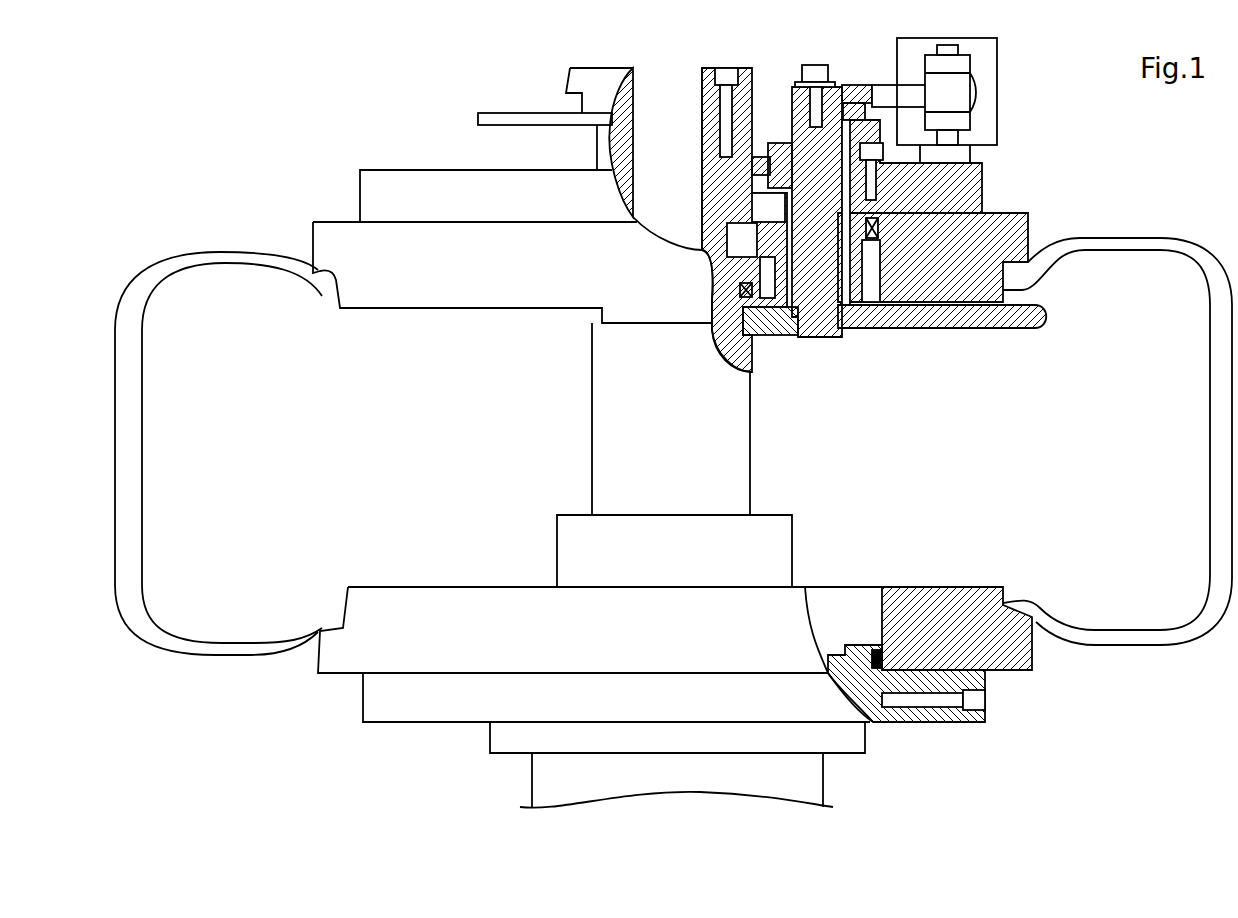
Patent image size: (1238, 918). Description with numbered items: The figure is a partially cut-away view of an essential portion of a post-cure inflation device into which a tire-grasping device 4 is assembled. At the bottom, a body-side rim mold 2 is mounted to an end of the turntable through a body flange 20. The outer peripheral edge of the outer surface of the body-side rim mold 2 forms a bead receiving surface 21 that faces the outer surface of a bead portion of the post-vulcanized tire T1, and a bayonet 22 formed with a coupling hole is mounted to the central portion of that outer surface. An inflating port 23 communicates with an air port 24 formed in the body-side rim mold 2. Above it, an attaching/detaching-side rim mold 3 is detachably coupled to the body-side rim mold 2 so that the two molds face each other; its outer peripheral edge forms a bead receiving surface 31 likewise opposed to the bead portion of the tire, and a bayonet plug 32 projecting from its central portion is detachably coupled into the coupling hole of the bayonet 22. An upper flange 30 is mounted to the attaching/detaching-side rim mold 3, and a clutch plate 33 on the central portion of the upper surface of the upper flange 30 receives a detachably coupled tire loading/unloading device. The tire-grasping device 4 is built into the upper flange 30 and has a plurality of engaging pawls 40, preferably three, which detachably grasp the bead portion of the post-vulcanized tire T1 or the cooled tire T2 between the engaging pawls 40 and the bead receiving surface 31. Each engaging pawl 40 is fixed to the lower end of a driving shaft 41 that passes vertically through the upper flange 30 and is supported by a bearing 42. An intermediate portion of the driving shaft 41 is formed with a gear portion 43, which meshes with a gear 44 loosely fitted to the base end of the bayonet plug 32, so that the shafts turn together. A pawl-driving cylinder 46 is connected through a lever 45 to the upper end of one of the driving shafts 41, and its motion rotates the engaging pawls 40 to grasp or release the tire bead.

The post-vulcanized tire T1 is at (1085, 240).
The cooled tire T2 is at (218, 453).
The body-side rim mold 2 is at (1034, 660).
The attaching/detaching-side rim mold 3 is at (1028, 216).
The tire-grasping device 4 is at (960, 332).
The body flange 20 is at (932, 722).
The bead receiving surface 21 is at (326, 610).
The bayonet 22 is at (560, 548).
The inflating port 23 is at (985, 702).
The air port 24 is at (855, 598).
The upper flange 30 is at (982, 172).
The bead receiving surface 31 is at (318, 298).
The bayonet plug 32 is at (598, 453).
The clutch plate 33 is at (632, 68).
The engaging pawl 40 is at (1022, 330).
The driving shaft 41 is at (752, 375).
The bearing 42 is at (858, 333).
The gear portion 43 is at (775, 193).
The gear 44 is at (763, 160).
The lever 45 is at (858, 85).
The pawl-driving cylinder 46 is at (997, 52).